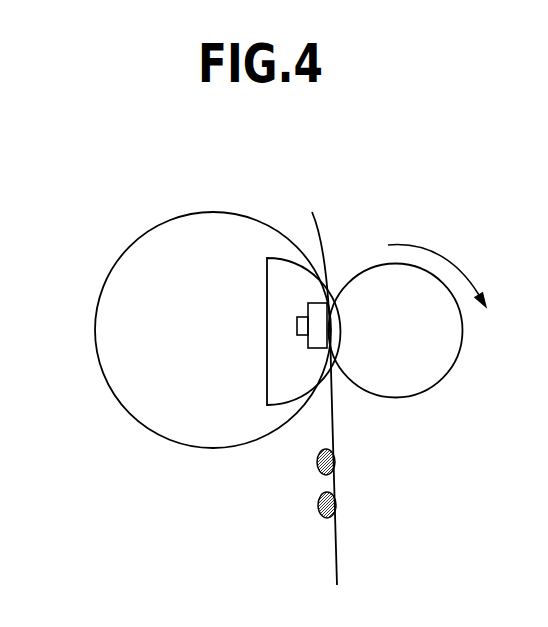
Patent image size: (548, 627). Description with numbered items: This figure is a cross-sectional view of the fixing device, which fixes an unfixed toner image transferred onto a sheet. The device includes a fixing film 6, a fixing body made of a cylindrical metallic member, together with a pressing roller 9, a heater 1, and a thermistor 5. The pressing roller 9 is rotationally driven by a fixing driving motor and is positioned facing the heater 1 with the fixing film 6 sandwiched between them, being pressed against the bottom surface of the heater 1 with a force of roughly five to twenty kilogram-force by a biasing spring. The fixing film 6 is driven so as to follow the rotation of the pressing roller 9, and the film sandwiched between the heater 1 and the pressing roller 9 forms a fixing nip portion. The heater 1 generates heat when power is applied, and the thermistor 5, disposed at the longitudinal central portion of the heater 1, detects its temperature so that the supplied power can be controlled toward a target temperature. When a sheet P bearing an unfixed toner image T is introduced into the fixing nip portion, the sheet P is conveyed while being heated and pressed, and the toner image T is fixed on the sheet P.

The fixing film 6 is at (96, 338).
The heater 1 is at (308, 310).
The thermistor 5 is at (297, 329).
The pressing roller 9 is at (462, 331).
The toner image T is at (318, 508).
The sheet P is at (340, 553).